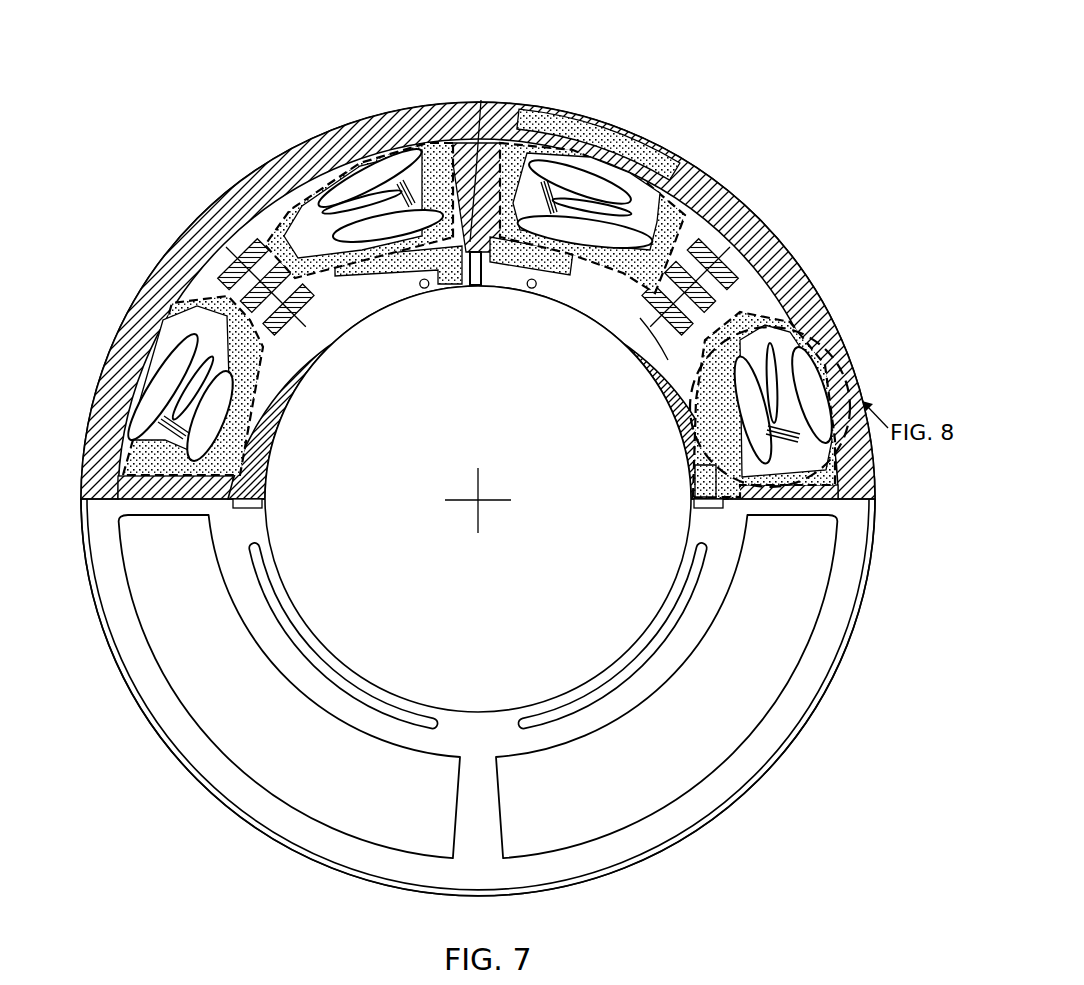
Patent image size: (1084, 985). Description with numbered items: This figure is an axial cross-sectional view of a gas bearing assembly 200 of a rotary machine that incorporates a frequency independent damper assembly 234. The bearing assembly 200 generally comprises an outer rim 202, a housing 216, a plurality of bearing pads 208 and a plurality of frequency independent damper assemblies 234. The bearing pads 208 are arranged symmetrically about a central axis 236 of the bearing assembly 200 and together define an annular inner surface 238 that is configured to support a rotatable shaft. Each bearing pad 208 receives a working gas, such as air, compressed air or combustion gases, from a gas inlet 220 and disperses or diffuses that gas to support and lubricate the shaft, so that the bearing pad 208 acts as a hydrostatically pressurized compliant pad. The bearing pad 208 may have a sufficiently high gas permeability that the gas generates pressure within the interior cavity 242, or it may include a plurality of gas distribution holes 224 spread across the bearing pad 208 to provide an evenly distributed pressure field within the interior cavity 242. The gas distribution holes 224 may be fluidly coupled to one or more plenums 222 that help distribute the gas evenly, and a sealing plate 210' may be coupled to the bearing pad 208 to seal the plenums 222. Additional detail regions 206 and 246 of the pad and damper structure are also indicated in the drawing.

The gas bearing assembly 200 is at (211, 41).
The outer rim 202 is at (478, 100).
The pole assembly 206 is at (313, 220).
The bearing pad 208 is at (294, 386).
The arcuate slot 210' is at (477, 635).
The housing 216 is at (470, 258).
The gas inlet 220 is at (722, 242).
The plenum 222 is at (644, 358).
The gas distribution holes 224 is at (534, 290).
The frequency independent damper assembly 234 is at (156, 340).
The central axis 236 is at (480, 503).
The annular inner surface 238 is at (692, 470).
The interior cavity 242 is at (496, 446).
The stippled band 246 is at (605, 165).